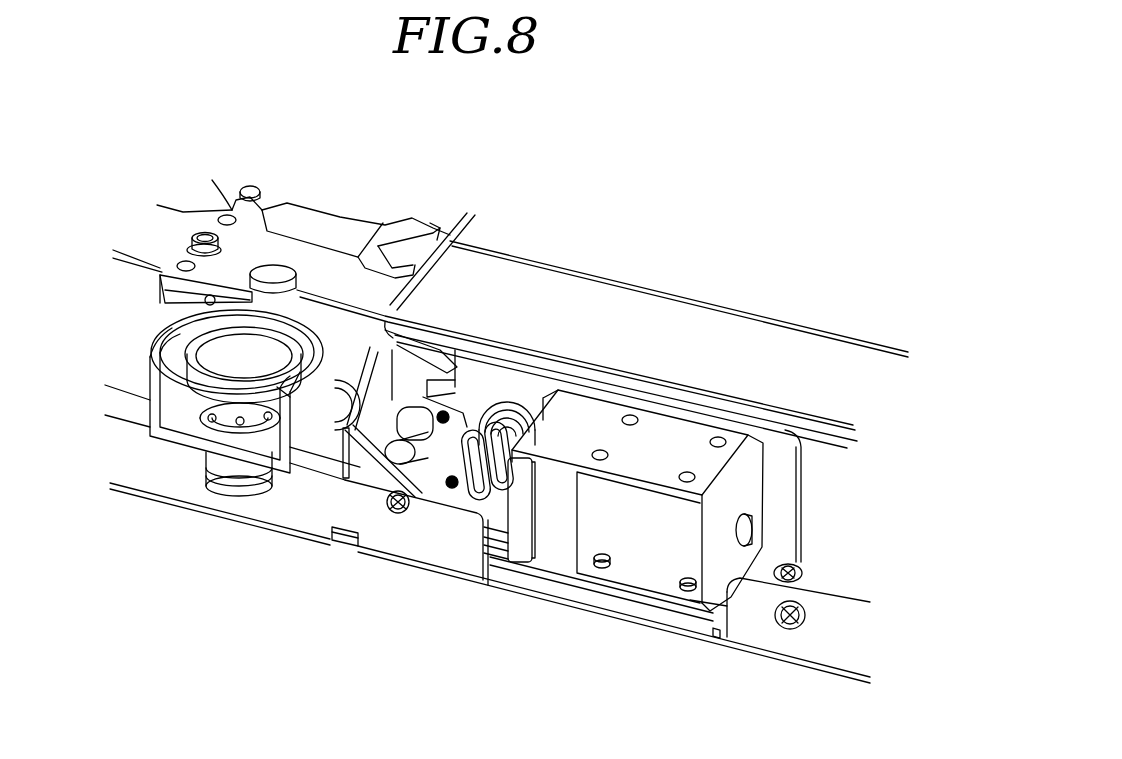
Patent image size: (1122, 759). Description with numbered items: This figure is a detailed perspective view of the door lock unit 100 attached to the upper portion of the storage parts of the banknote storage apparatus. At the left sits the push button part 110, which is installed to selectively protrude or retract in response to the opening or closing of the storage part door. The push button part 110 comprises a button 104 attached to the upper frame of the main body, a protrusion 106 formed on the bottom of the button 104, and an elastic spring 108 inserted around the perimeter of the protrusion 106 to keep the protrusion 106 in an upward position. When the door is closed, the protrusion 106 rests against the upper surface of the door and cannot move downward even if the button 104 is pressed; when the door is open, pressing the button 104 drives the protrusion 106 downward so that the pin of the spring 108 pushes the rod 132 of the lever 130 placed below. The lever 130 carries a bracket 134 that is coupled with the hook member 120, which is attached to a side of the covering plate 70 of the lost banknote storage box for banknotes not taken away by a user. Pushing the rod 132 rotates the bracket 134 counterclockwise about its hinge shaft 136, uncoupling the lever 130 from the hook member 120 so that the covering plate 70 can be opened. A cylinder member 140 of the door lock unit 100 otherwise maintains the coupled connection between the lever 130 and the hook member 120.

The door lock unit 100 is at (222, 107).
The covering plate 70 is at (735, 323).
The push button part 110 is at (318, 318).
The bracket 134 is at (415, 358).
The hook member 120 is at (445, 393).
The cylinder member 140 is at (525, 393).
The button 104 is at (240, 362).
The elastic spring 108 is at (240, 420).
The protrusion 106 is at (257, 490).
The rod 132 is at (327, 450).
The lever 130 is at (380, 470).
The hinge shaft 136 is at (400, 512).